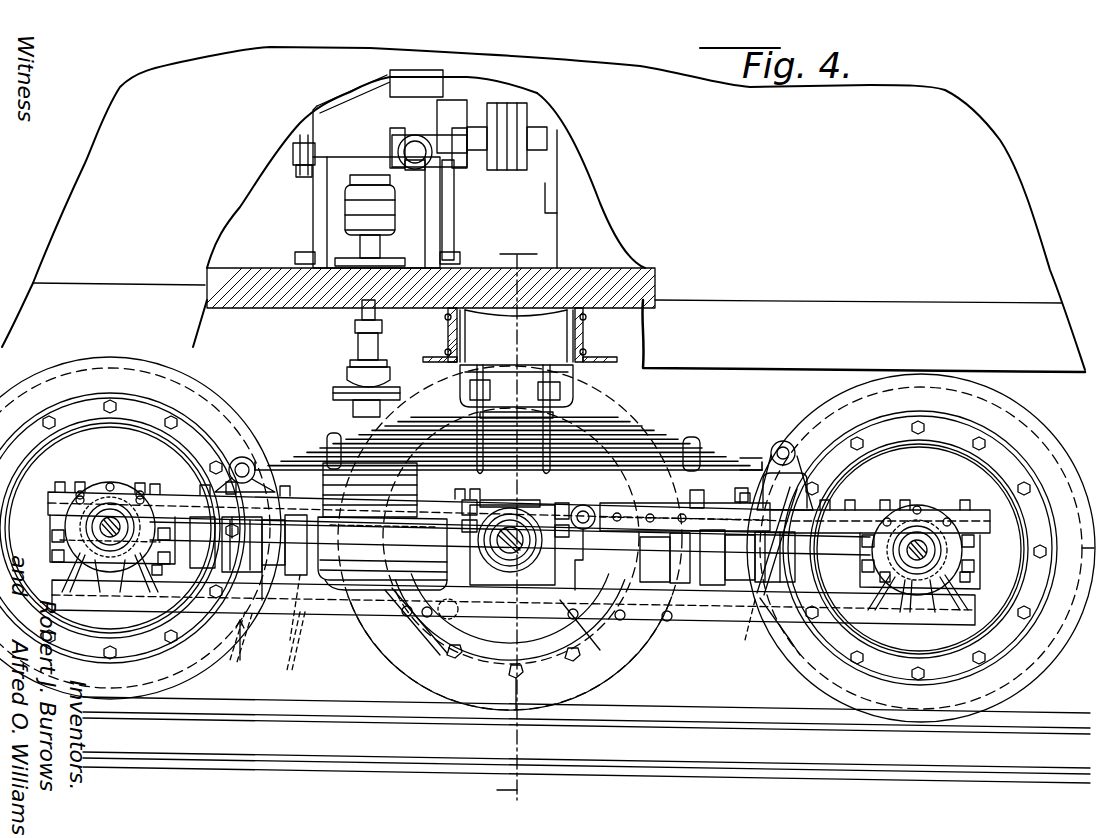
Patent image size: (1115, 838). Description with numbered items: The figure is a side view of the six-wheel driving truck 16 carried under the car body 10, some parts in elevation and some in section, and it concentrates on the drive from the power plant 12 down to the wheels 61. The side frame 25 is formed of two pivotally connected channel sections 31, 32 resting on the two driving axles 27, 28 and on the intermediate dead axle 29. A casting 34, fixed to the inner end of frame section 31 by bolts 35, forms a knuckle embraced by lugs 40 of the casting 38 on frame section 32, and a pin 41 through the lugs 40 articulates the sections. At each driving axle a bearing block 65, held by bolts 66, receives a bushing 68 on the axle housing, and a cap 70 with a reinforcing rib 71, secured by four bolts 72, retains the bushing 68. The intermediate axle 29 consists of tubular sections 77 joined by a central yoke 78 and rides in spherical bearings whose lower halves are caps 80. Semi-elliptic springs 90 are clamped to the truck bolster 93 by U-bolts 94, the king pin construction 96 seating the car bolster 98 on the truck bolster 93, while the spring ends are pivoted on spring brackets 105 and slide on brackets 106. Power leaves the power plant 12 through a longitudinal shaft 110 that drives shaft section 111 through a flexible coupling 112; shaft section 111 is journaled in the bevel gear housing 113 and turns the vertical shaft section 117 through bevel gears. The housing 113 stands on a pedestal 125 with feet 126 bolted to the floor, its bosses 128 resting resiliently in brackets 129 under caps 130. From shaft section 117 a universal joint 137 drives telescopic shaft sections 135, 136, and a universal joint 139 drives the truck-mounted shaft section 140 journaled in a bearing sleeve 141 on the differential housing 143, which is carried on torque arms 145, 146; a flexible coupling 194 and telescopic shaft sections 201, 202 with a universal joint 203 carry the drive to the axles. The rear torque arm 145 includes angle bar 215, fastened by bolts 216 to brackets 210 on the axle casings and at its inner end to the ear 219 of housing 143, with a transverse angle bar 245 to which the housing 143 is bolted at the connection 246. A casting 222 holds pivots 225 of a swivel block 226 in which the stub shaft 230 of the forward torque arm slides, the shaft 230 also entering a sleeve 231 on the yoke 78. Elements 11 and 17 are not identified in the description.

The car body 10 is at (90, 168).
The motor housing wall 11 is at (242, 200).
The power plant 12 is at (590, 213).
The driving truck 16 is at (1000, 502).
The rail 17 is at (395, 705).
The side frame 25 is at (175, 490).
The driving axle 27 is at (100, 510).
The driving axle 28 is at (922, 535).
The intermediate axle 29 is at (383, 548).
The frame section 31 is at (386, 556).
The frame section 32 is at (718, 512).
The casting 34 is at (562, 543).
The bolts 35 is at (560, 503).
The casting 38 is at (655, 504).
The lugs 40 is at (582, 505).
The pin 41 is at (590, 508).
The wheels 61 is at (37, 440).
The bearing block 65 is at (70, 508).
The bolts 66 is at (48, 492).
The bearing bushing 68 is at (112, 515).
The cap 70 is at (122, 572).
The reinforcing rib 71 is at (900, 582).
The bolts 72 is at (60, 488).
The tubular sections 77 is at (488, 505).
The central yoke 78 is at (500, 500).
The caps 80 is at (548, 556).
The semi-elliptic spring 90 is at (695, 440).
The truck bolster 93 is at (575, 392).
The U-bolts 94 is at (495, 407).
The king pin construction 96 is at (448, 333).
The car bolster 98 is at (505, 362).
The spring bracket 105 is at (245, 458).
The spring bracket 106 is at (796, 447).
The longitudinal shaft 110 is at (555, 124).
The shaft section 111 is at (498, 112).
The flexible coupling 112 is at (520, 170).
The bevel gear housing 113 is at (395, 105).
The vertical shaft section 117 is at (340, 236).
The pedestal 125 is at (448, 243).
The supporting feet 126 is at (295, 258).
The supporting bosses 128 is at (292, 155).
The brackets 129 is at (303, 177).
The caps 130 is at (313, 130).
The telescopic shaft section 135 is at (355, 318).
The telescopic shaft section 136 is at (357, 346).
The universal joint 137 is at (355, 292).
The universal joint 139 is at (345, 383).
The shaft section 140 is at (348, 407).
The bearing sleeve 141 is at (340, 423).
The differential housing 143 is at (326, 503).
The rear torque arm 145 is at (250, 641).
The forward torque arm 146 is at (790, 632).
The flexible coupling 194 is at (252, 525).
The telescopic shaft section 201 is at (655, 558).
The telescopic shaft section 202 is at (735, 560).
The universal joint 203 is at (755, 588).
The brackets 210 is at (82, 570).
The angle bar 215 is at (243, 616).
The bolts 216 is at (160, 577).
The ear 219 is at (428, 575).
The casting 222 is at (375, 640).
The pivots 225 is at (483, 660).
The swivel block 226 is at (447, 648).
The stub shaft 230 is at (562, 650).
The sleeve 231 is at (518, 655).
The transverse angle bar 245 is at (292, 618).
The bolted connection 246 is at (258, 580).